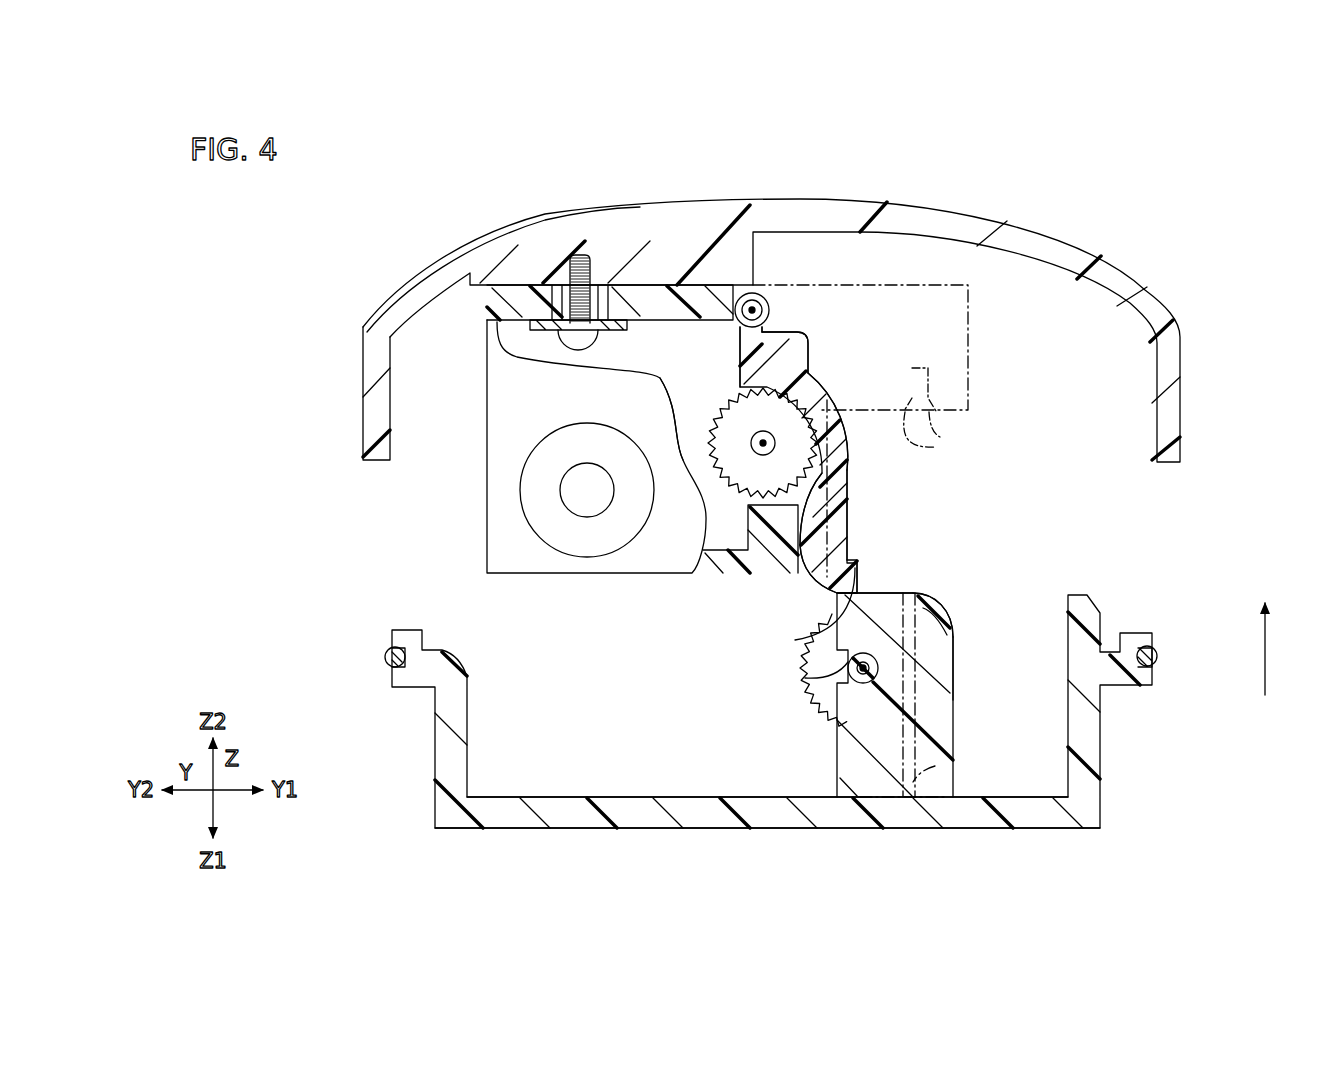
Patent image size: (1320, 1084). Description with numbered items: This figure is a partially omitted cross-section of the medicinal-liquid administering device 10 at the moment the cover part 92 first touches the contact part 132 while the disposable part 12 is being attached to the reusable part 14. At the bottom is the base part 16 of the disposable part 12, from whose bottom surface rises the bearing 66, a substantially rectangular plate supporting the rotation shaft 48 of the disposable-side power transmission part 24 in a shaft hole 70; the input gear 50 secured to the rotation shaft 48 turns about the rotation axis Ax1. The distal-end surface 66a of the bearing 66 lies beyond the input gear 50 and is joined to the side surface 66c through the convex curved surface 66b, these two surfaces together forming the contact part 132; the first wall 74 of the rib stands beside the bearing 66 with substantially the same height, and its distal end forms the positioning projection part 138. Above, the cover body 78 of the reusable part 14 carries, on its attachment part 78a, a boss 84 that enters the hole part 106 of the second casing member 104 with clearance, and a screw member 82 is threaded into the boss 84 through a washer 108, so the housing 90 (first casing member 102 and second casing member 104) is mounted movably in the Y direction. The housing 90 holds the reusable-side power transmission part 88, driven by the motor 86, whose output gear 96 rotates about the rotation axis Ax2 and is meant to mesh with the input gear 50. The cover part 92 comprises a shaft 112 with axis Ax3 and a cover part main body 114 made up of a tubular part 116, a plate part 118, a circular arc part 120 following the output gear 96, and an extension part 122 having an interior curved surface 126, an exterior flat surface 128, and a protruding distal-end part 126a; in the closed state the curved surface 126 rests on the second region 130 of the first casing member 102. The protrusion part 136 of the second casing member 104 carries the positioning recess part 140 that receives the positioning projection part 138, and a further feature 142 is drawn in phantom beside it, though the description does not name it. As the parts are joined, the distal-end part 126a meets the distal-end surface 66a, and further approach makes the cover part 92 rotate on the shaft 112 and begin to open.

The medicinal-liquid administering device 10 is at (393, 197).
The disposable part 12 is at (810, 709).
The reusable part 14 is at (804, 310).
The base part 16 is at (1085, 809).
The disposable-side power transmission part 24 is at (893, 686).
The rotation shaft 48 is at (857, 686).
The input gear 50 is at (823, 697).
The bearing 66 is at (960, 657).
The distal-end surface 66a is at (895, 595).
The convex curved surface 66b is at (946, 607).
The side surface 66c is at (955, 668).
The shaft hole 70 is at (806, 677).
The first wall 74 is at (935, 766).
The cover body 78 is at (1167, 378).
The attachment part 78a is at (787, 228).
The screw member 82 is at (593, 331).
The boss 84 is at (553, 302).
The motor 86 is at (545, 497).
The reusable-side power transmission part 88 is at (768, 434).
The housing 90 is at (431, 333).
The cover part 92 is at (785, 444).
The output gear 96 is at (715, 433).
The first casing member 102 is at (507, 387).
The second casing member 104 is at (465, 282).
The hole part 106 is at (598, 292).
The washer 108 is at (620, 332).
The shaft 112 is at (752, 293).
The cover part main body 114 is at (845, 452).
The tubular part 116 is at (762, 305).
The plate part 118 is at (770, 344).
The circular arc part 120 is at (795, 490).
The extension part 122 is at (857, 590).
The curved surface 126 is at (800, 552).
The distal-end part 126a is at (795, 640).
The flat surface 128 is at (847, 512).
The second region 130 is at (805, 532).
The contact part 132 is at (960, 577).
The protrusion part 136 is at (970, 320).
The positioning projection part 138 is at (953, 640).
The positioning recess part 140 is at (930, 382).
The hook 142 is at (935, 447).
The rotation axis Ax1 is at (868, 661).
The rotation axis Ax2 is at (772, 448).
The axis Ax3 is at (752, 310).